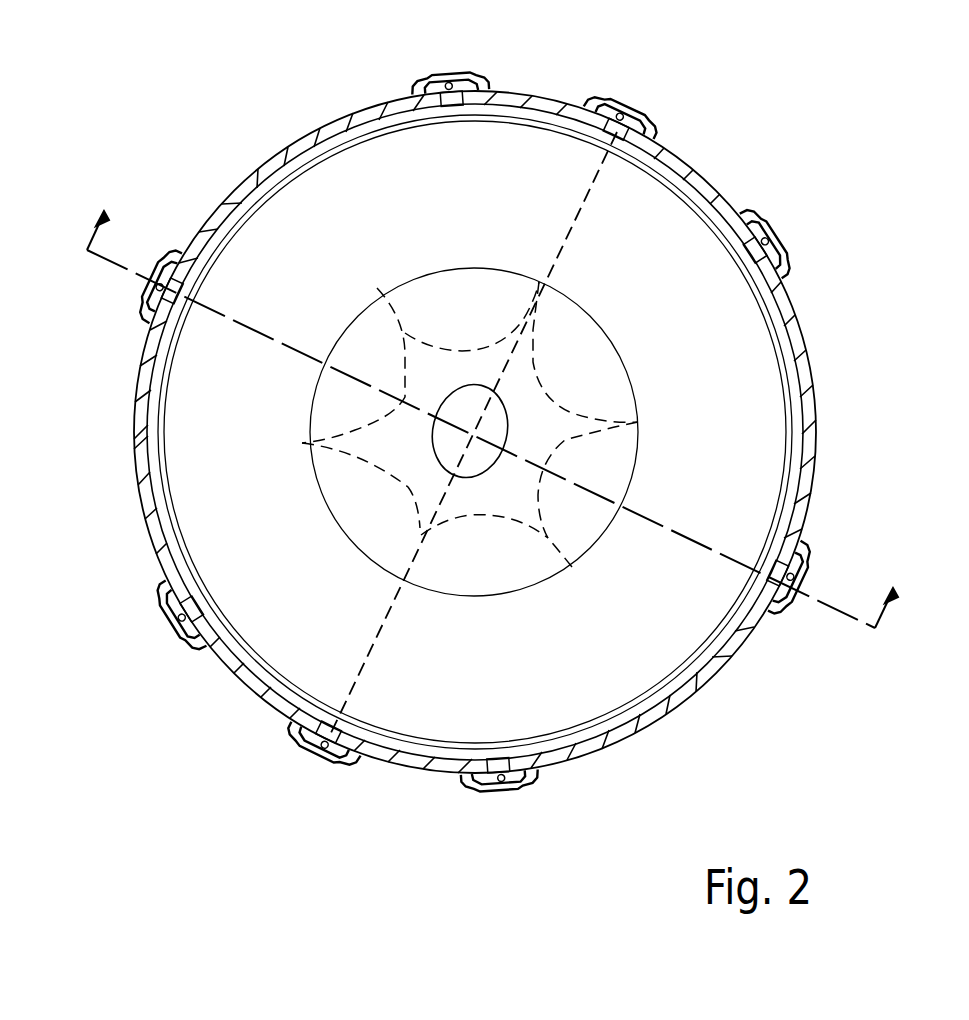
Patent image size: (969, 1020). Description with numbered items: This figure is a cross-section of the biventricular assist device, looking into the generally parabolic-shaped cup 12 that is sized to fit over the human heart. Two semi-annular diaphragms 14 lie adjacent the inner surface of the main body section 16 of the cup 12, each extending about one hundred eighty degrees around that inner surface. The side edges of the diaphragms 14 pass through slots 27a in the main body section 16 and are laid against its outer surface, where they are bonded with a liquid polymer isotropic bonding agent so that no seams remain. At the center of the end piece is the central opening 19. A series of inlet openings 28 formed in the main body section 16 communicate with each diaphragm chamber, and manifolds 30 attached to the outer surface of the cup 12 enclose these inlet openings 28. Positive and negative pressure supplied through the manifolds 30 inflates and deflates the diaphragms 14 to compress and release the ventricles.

The cup 12 is at (818, 439).
The semi-annular diaphragms 14 is at (163, 446).
The main body section 16 is at (300, 142).
The central opening 19 is at (505, 437).
The slots 27a is at (619, 128).
The inlet openings 28 is at (449, 100).
The manifolds 30 is at (452, 75).